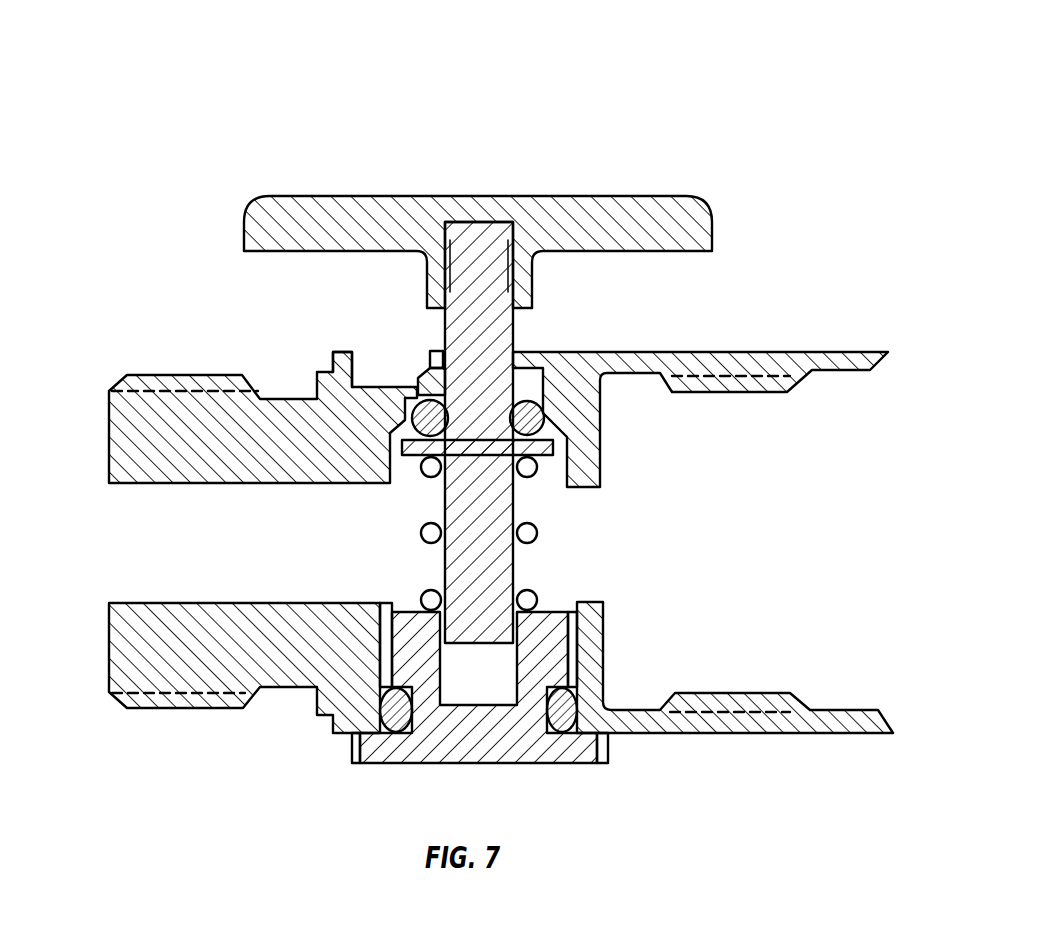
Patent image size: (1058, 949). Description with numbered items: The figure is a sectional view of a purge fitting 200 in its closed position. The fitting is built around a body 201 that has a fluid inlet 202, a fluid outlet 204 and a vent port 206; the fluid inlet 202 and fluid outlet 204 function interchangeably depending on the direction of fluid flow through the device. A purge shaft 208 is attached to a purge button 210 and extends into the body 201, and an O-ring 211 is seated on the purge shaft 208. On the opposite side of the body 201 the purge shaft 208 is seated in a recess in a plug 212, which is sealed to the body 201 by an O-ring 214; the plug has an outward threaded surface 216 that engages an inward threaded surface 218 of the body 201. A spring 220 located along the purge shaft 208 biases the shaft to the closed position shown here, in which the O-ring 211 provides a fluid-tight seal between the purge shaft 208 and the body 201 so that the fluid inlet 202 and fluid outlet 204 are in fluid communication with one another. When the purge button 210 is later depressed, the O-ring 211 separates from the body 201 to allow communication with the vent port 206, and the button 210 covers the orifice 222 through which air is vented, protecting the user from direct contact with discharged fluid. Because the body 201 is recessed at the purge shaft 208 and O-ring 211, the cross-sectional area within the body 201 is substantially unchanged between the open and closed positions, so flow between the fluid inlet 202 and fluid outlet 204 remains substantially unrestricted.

The purge fitting 200 is at (618, 60).
The body 201 is at (130, 663).
The fluid inlet 202 is at (127, 550).
The fluid outlet 204 is at (713, 530).
The vent port 206 is at (423, 370).
The purge shaft 208 is at (517, 335).
The purge button 210 is at (270, 205).
The O-ring 211 is at (545, 416).
The plug 212 is at (455, 745).
The O-ring 214 is at (585, 702).
The outward threaded surface 216 is at (392, 655).
The inward threaded surface 218 is at (383, 618).
The spring 220 is at (540, 533).
The orifice 222 is at (368, 355).